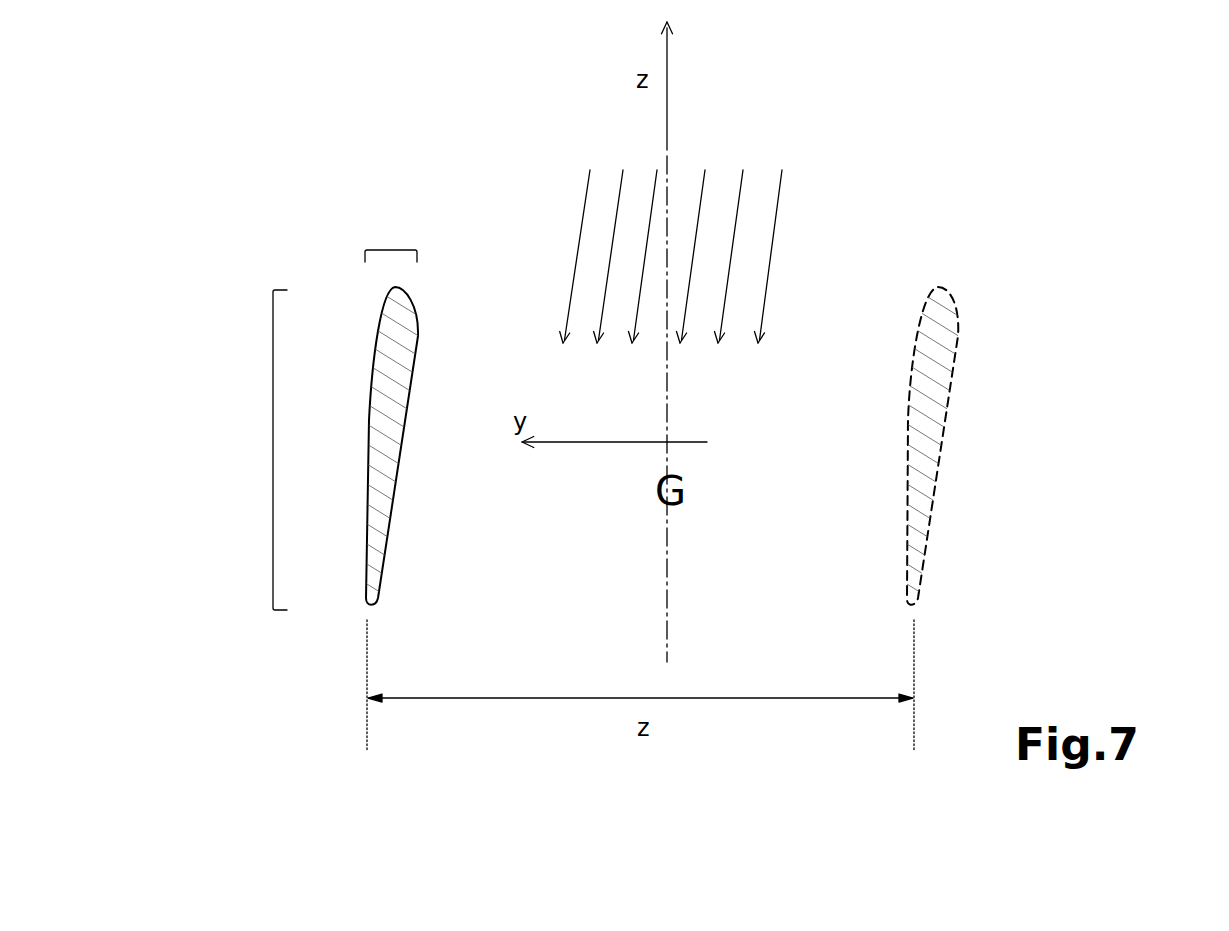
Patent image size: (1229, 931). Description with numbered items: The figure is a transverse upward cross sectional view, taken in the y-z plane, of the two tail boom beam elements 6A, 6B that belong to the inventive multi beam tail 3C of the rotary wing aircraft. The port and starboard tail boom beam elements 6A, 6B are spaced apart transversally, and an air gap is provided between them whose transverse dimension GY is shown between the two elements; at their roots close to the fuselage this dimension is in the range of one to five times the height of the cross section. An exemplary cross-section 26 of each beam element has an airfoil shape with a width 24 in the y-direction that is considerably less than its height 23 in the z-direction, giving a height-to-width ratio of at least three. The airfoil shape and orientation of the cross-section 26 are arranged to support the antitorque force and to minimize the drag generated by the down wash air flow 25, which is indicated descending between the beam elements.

The tail boom beam element 6A is at (419, 322).
The tail boom beam element 6B is at (959, 333).
The height 23 is at (273, 446).
The width 24 is at (391, 250).
The down wash air flow 25 is at (783, 217).
The cross-section 26 is at (389, 465).
The tail 3C is at (1031, 463).
The transverse dimension GY is at (758, 694).